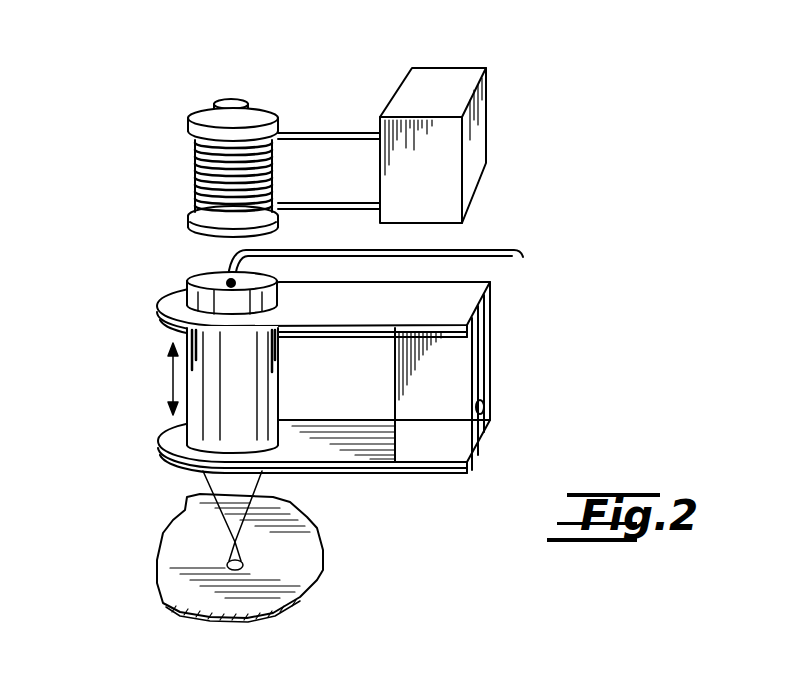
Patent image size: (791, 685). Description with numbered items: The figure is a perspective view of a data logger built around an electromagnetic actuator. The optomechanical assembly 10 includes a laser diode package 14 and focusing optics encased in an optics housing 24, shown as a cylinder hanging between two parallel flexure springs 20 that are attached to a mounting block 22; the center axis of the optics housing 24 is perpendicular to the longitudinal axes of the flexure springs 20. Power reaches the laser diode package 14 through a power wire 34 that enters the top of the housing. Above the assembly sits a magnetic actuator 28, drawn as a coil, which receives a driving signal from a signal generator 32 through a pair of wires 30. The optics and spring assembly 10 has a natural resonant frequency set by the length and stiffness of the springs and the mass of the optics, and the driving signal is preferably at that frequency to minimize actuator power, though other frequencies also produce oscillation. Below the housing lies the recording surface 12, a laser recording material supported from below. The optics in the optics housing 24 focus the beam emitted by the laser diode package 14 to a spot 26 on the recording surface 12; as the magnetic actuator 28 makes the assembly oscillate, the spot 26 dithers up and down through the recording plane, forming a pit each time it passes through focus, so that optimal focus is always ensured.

The optomechanical assembly 10 is at (542, 175).
The recording surface 12 is at (300, 550).
The laser diode package 14 is at (198, 280).
The flexure springs 20 is at (375, 315).
The mounting block 22 is at (328, 377).
The optics housing 24 is at (263, 403).
The spot 26 is at (235, 542).
The magnetic actuator 28 is at (195, 162).
The wires 30 is at (327, 130).
The signal generator 32 is at (482, 140).
The power wire 34 is at (503, 247).